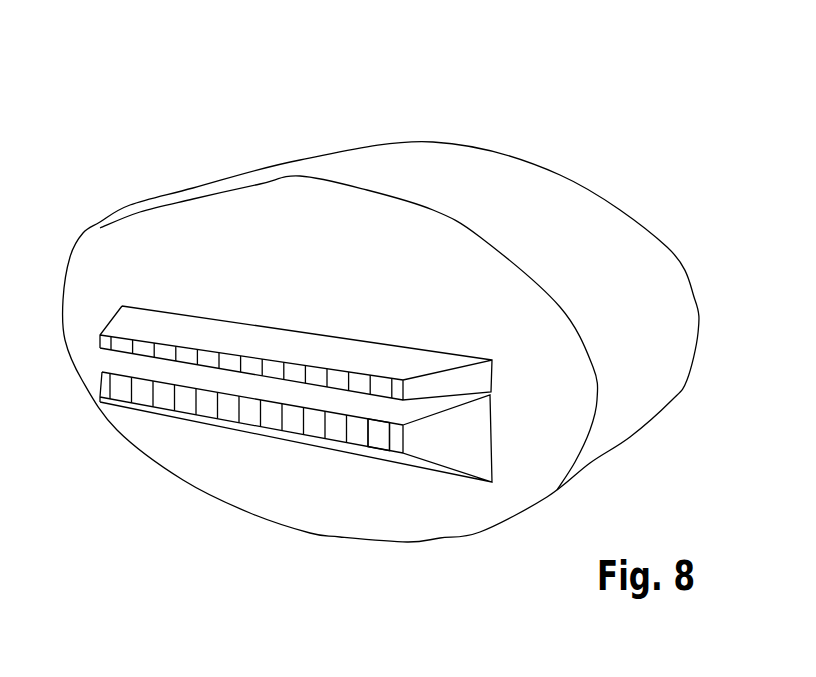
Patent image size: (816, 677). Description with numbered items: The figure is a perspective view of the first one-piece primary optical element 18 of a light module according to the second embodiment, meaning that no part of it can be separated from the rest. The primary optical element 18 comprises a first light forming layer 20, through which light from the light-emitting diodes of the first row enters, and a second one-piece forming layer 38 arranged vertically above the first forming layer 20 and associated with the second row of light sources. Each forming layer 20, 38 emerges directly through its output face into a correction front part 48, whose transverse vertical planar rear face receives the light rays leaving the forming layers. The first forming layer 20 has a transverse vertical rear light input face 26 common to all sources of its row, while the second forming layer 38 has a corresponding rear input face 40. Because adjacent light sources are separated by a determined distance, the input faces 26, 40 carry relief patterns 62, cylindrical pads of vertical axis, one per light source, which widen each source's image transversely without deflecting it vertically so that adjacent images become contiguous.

The primary optical element 18 is at (272, 112).
The correction front part 48 is at (425, 160).
The second forming layer 38 is at (371, 332).
The rear light input face 40 is at (165, 350).
The first light forming layer 20 is at (351, 480).
The rear light input face 26 is at (253, 413).
The relief patterns 62 is at (377, 438).